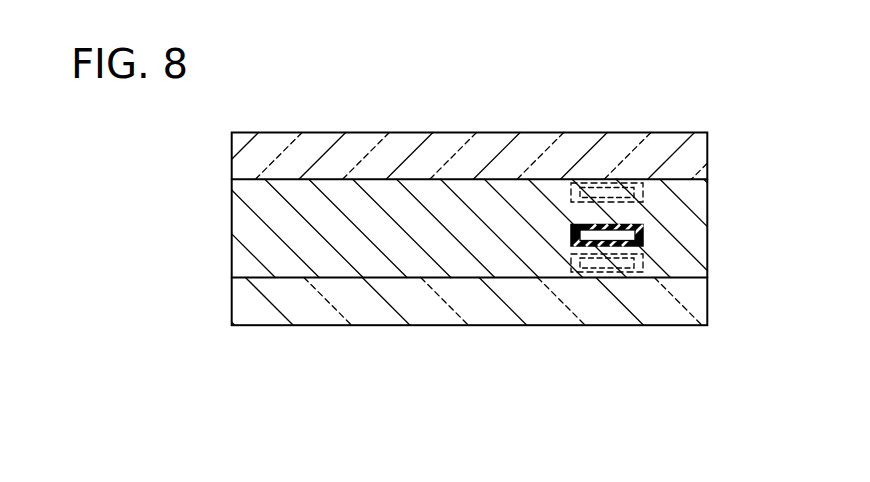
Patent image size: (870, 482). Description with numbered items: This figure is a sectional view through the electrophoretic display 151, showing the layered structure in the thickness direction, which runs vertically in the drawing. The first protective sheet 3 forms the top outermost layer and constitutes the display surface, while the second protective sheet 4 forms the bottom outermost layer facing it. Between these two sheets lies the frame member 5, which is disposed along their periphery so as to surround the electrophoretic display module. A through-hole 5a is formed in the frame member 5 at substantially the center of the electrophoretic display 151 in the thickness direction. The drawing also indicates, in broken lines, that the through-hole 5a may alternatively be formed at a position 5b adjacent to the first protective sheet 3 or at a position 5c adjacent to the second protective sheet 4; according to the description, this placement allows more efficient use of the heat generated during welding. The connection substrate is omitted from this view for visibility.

The electrophoretic display 151 is at (505, 110).
The first protective sheet 3 is at (407, 132).
The frame member 5 is at (245, 222).
The second protective sheet 4 is at (424, 313).
The through-hole 5a is at (633, 246).
The position adjacent to the first protective sheet 5b is at (603, 181).
The position adjacent to the second protective sheet 5c is at (584, 273).